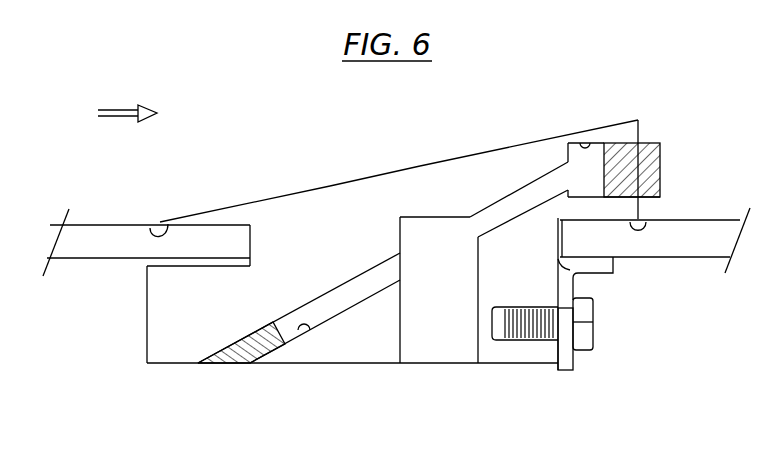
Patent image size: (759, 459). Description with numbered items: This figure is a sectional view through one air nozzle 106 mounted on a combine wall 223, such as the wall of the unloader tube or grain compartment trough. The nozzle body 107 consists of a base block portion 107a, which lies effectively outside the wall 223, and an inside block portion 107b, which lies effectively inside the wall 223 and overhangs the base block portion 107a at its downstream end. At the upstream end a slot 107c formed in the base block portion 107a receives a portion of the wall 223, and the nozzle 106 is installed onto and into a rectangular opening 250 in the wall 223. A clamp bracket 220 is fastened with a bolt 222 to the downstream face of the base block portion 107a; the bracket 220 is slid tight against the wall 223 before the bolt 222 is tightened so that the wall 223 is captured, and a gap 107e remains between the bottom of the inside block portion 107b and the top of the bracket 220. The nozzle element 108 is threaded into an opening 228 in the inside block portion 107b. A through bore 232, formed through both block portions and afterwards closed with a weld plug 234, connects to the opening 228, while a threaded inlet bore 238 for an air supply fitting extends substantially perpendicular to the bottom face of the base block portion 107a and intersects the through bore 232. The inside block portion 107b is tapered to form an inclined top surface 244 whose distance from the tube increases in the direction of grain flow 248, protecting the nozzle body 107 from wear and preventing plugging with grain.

The nozzle 106 is at (540, 139).
The nozzle body 107 is at (297, 191).
The base block portion 107a is at (156, 327).
The inside block portion 107b is at (385, 173).
The slot 107c is at (149, 224).
The gap 107e is at (648, 228).
The nozzle element 108 is at (660, 147).
The clamp bracket 220 is at (599, 275).
The bolt 222 is at (593, 323).
The combine wall 223 is at (135, 248).
The opening 228 is at (588, 147).
The through bore 232 is at (306, 330).
The weld plug 234 is at (232, 364).
The inlet bore 238 is at (476, 335).
The inclined top surface 244 is at (450, 158).
The direction of grain flow 248 is at (114, 105).
The rectangular opening 250 is at (253, 242).